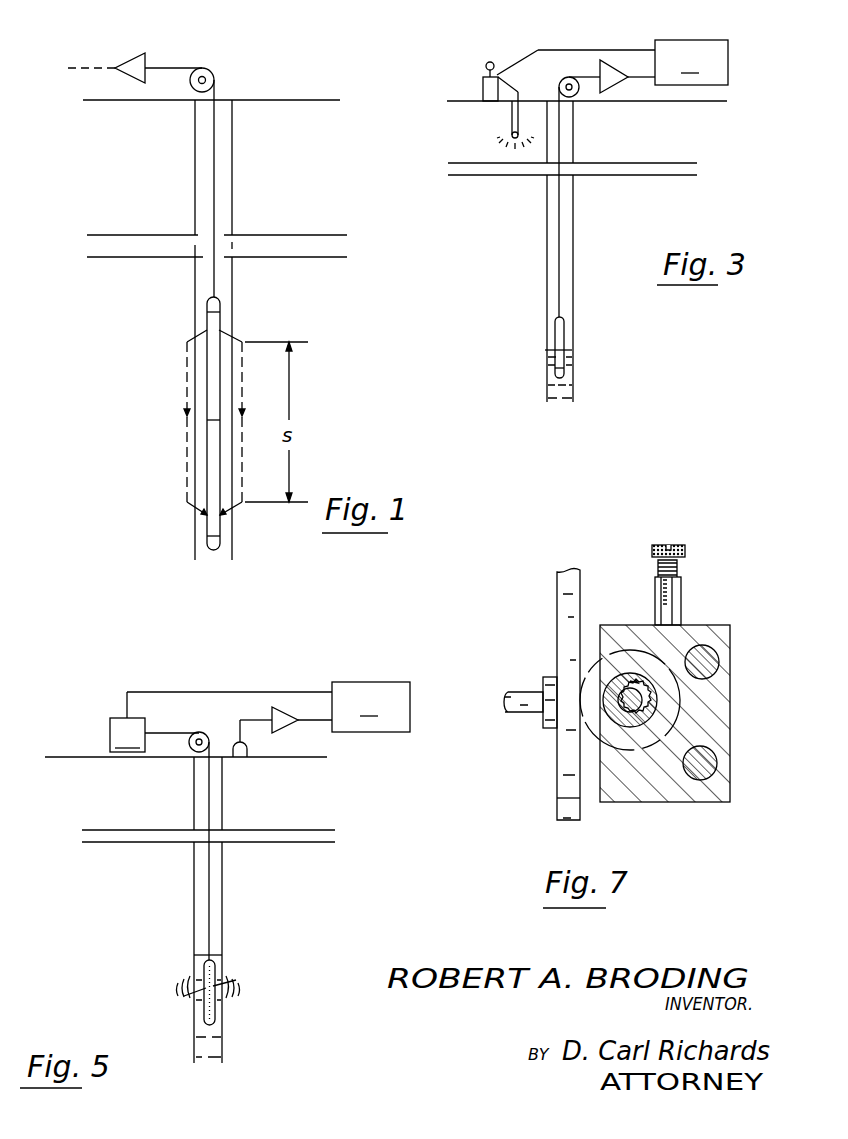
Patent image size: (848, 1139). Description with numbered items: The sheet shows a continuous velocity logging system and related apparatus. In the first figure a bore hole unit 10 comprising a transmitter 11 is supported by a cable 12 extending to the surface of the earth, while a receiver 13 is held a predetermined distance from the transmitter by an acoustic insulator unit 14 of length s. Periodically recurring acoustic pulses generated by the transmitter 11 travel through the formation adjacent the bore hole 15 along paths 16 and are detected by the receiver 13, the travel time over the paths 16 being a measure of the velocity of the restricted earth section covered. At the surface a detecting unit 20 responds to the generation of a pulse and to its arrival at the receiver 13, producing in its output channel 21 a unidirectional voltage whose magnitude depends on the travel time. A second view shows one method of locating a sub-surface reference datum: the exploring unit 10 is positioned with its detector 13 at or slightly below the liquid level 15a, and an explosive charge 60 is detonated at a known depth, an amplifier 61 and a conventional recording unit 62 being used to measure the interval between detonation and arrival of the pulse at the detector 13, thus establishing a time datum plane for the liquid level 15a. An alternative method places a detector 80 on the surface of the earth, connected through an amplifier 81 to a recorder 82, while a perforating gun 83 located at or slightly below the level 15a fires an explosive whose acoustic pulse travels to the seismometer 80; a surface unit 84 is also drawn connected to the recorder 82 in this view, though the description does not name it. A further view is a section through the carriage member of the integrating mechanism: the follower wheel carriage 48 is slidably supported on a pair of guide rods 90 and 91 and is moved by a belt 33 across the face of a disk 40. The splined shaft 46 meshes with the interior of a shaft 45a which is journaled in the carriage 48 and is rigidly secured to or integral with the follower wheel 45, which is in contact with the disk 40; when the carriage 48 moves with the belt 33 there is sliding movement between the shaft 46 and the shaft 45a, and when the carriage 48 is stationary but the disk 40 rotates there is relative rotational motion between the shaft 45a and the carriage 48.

In FIG. 1, the bore hole unit 10 is at (141, 558).
In FIG. 3, the bore hole unit 10 is at (560, 325).
In FIG. 1, the transmitter 11 is at (216, 320).
In FIG. 1, the cable 12 is at (214, 275).
In FIG. 1, the receiver 13 is at (218, 538).
In FIG. 3, the receiver 13 is at (565, 375).
In FIG. 1, the acoustic insulator unit 14 is at (210, 427).
In FIG. 1, the bore hole 15 is at (232, 195).
In FIG. 3, the liquid level 15a is at (572, 350).
In FIG. 5, the liquid level 15a is at (214, 955).
In FIG. 1, the paths 16 is at (186, 362).
In FIG. 1, the detecting unit 20 is at (140, 62).
In FIG. 1, the output channel 21 is at (110, 68).
In FIG. 7, the belt 33 is at (672, 607).
In FIG. 7, the disk 40 is at (557, 778).
In FIG. 7, the follower wheel 45 is at (586, 686).
In FIG. 7, the shaft 45a is at (648, 680).
In FIG. 7, the splined shaft 46 is at (651, 705).
In FIG. 7, the follower wheel carriage 48 is at (730, 700).
In FIG. 3, the explosive charge 60 is at (510, 132).
In FIG. 3, the amplifier 61 is at (614, 87).
In FIG. 3, the recording unit 62 is at (728, 75).
In FIG. 5, the detector 80 is at (244, 758).
In FIG. 5, the amplifier 81 is at (284, 728).
In FIG. 5, the recorder 82 is at (355, 732).
In FIG. 5, the perforating gun 83 is at (215, 1012).
In FIG. 5, the control unit 84 is at (221, 722).
In FIG. 7, the guide rod 90 is at (716, 762).
In FIG. 7, the guide rod 91 is at (718, 660).